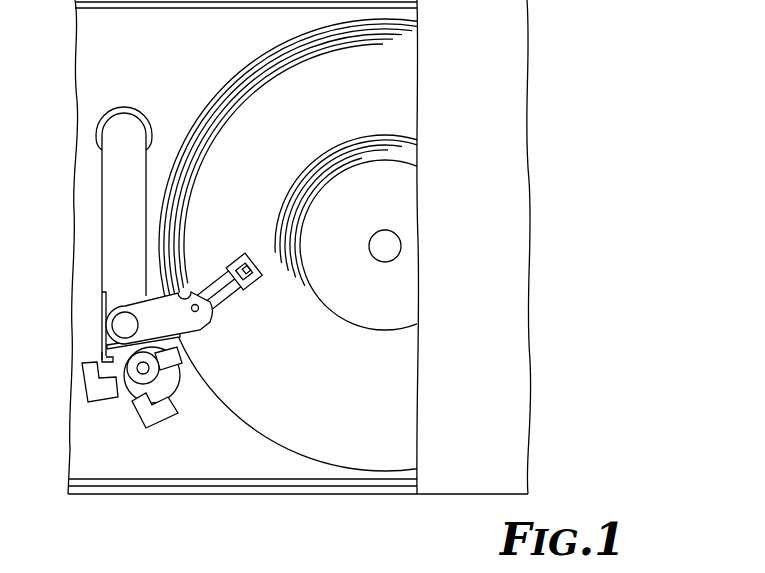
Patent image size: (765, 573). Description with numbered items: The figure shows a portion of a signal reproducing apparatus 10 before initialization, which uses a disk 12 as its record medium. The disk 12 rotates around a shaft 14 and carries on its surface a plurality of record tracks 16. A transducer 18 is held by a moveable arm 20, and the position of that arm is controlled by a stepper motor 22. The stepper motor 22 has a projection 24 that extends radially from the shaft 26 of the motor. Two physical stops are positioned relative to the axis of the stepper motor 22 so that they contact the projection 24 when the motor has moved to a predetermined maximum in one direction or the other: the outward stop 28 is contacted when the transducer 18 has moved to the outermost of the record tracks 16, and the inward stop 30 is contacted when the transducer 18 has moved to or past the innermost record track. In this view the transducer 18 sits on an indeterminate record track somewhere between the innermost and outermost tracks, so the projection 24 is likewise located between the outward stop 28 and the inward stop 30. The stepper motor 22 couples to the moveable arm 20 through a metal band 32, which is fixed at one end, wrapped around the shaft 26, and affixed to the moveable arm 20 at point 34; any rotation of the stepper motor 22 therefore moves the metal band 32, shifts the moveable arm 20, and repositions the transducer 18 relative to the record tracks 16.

The signal reproducing apparatus 10 is at (72, 34).
The disk 12 is at (403, 194).
The shaft 14 is at (401, 248).
The record tracks 16 is at (325, 157).
The transducer 18 is at (247, 254).
The moveable arm 20 is at (107, 222).
The stepper motor 22 is at (180, 380).
The projection 24 is at (182, 344).
The shaft of the stepper motor 26 is at (128, 401).
The outward stop 28 is at (85, 382).
The inward stop 30 is at (157, 418).
The metal band 32 is at (100, 359).
The point 34 is at (100, 312).